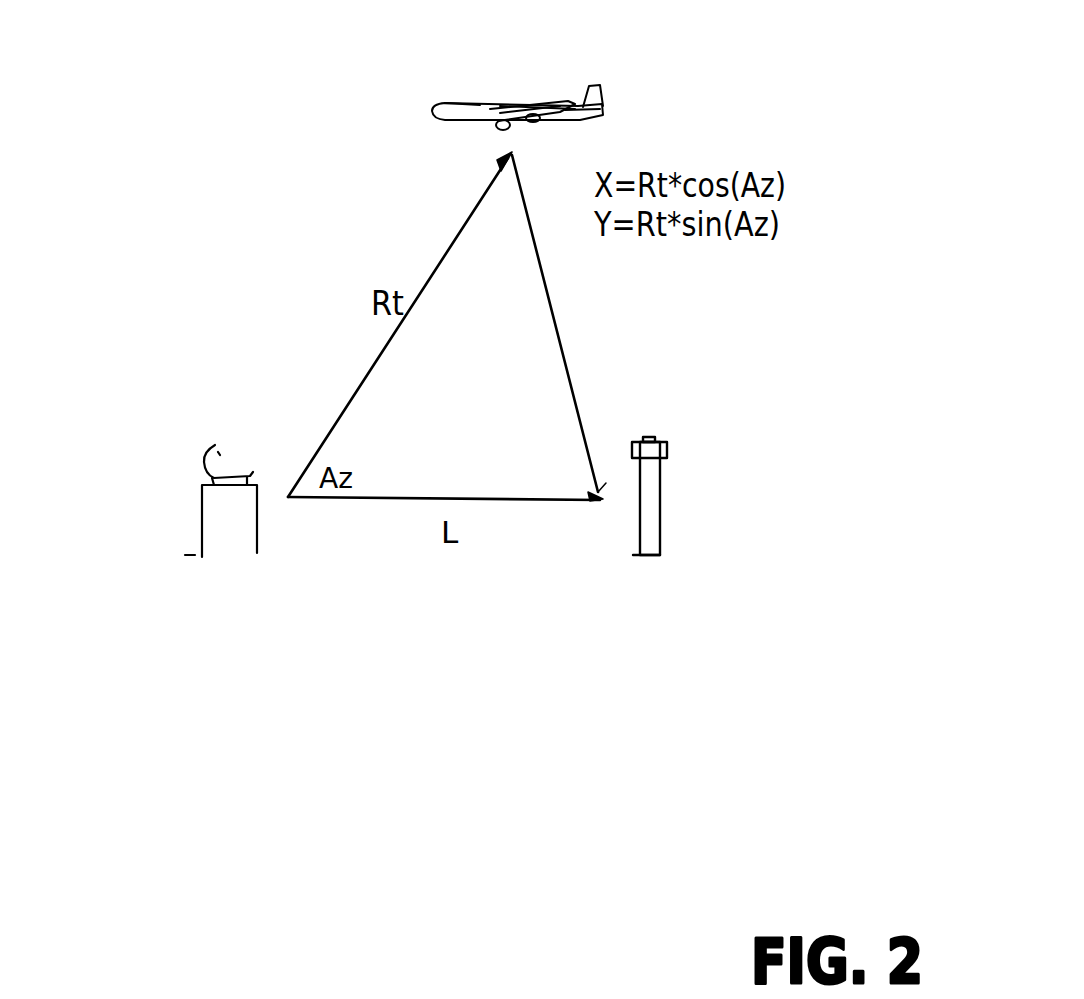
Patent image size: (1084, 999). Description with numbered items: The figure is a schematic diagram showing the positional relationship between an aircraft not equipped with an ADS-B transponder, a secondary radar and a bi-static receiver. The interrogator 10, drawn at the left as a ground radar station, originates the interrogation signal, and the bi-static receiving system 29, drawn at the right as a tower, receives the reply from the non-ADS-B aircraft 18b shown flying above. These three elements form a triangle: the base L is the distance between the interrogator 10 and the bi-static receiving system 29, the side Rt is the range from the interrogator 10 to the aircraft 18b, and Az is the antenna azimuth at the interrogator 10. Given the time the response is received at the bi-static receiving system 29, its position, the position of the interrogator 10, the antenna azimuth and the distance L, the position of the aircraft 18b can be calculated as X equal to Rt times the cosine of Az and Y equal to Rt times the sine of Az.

The interrogator 10 is at (157, 481).
The non-ADS-B aircraft 18b is at (498, 93).
The bi-static receiving system 29 is at (712, 477).